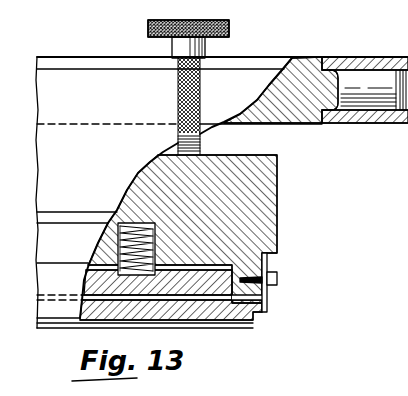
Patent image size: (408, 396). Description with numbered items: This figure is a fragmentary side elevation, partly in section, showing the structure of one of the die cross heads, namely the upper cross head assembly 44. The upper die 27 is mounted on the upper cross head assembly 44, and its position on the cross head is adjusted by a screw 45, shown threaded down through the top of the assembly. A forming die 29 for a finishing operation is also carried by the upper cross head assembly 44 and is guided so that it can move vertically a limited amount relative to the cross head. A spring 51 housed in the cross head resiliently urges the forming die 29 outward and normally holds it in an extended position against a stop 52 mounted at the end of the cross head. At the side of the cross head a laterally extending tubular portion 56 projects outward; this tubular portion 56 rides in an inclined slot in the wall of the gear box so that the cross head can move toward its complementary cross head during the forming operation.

The upper die 27 is at (222, 192).
The forming die 29 is at (209, 315).
The upper cross head assembly 44 is at (279, 194).
The screw 45 is at (147, 26).
The spring 51 is at (155, 237).
The stop 52 is at (269, 300).
The tubular portion 56 is at (362, 57).